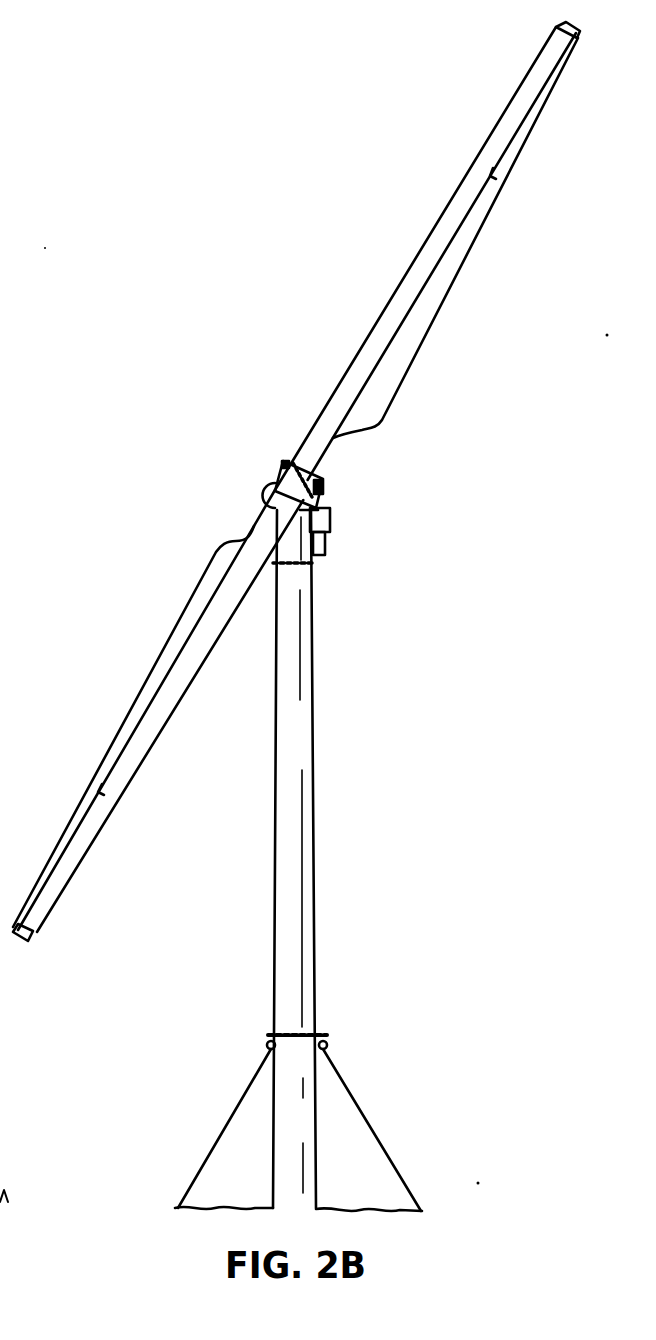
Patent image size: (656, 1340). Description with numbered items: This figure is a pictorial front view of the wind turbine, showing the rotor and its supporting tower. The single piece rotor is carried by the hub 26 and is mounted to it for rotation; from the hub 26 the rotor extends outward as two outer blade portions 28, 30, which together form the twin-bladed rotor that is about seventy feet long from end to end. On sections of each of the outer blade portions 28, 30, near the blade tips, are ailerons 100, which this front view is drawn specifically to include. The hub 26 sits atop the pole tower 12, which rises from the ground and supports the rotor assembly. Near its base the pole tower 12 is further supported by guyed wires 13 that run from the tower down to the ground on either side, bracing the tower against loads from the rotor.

The pole tower 12 is at (310, 1133).
The guyed wires 13 is at (232, 1120).
The hub 26 is at (275, 473).
The outer blade portion 28 is at (368, 337).
The outer blade portion 30 is at (182, 697).
The ailerons 100 is at (505, 162).